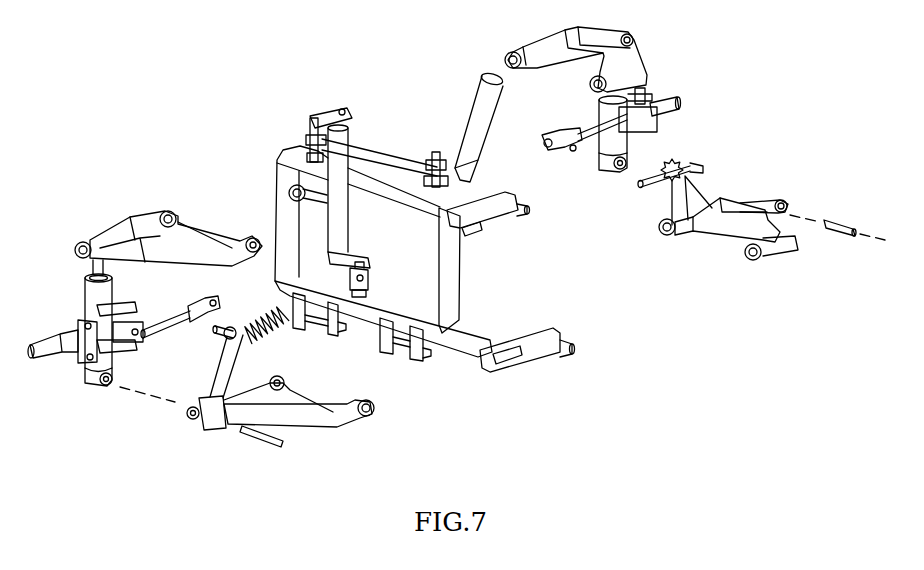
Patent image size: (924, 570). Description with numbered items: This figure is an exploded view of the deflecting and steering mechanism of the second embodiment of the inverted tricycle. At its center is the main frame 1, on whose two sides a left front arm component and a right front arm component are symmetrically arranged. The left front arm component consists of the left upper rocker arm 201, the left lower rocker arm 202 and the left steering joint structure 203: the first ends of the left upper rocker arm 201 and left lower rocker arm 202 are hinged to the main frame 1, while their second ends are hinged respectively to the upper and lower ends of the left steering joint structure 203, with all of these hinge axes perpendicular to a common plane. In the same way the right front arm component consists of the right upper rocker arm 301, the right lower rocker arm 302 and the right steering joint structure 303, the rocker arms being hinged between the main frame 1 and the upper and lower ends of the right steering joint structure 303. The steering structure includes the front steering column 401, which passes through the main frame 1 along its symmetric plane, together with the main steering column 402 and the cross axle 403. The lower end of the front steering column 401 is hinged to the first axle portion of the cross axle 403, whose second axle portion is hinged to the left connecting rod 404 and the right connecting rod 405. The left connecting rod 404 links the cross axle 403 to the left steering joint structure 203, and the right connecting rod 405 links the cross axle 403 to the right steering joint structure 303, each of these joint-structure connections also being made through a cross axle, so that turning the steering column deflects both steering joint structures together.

The main frame 1 is at (473, 338).
The left upper rocker arm 201 is at (143, 228).
The left lower rocker arm 202 is at (300, 417).
The left steering joint structure 203 is at (95, 296).
The right upper rocker arm 301 is at (560, 39).
The right lower rocker arm 302 is at (730, 232).
The right steering joint structure 303 is at (607, 113).
The front steering column 401 is at (334, 240).
The main steering column 402 is at (470, 135).
The cross axle 403 is at (362, 293).
The left connecting rod 404 is at (173, 315).
The right connecting rod 405 is at (603, 142).